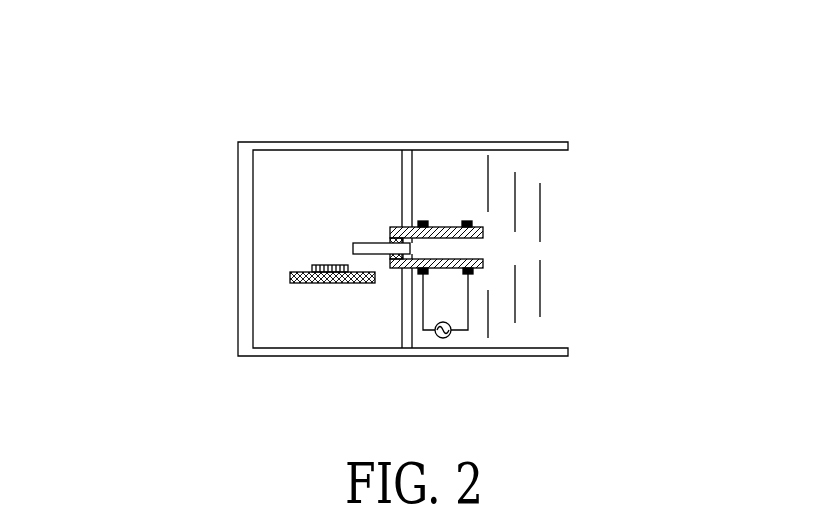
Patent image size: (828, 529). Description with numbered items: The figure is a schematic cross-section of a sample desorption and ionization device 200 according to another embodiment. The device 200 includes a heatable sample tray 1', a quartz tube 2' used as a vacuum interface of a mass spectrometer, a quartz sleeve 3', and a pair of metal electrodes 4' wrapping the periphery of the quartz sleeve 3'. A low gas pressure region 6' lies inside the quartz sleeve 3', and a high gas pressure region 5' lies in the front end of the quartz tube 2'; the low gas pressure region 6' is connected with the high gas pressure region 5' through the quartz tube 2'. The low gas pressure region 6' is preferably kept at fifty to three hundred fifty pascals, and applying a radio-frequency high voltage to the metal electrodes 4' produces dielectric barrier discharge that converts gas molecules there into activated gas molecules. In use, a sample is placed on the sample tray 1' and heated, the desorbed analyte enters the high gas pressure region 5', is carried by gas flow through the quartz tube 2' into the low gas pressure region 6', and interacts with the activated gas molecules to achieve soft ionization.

The sample desorption and ionization device 200 is at (220, 108).
The high gas pressure region 5' is at (367, 249).
The quartz sleeve 3' is at (436, 153).
The metal electrodes 4' is at (454, 337).
The quartz tube 2' is at (383, 345).
The heatable sample tray 1' is at (332, 339).
The low gas pressure region 6' is at (570, 246).